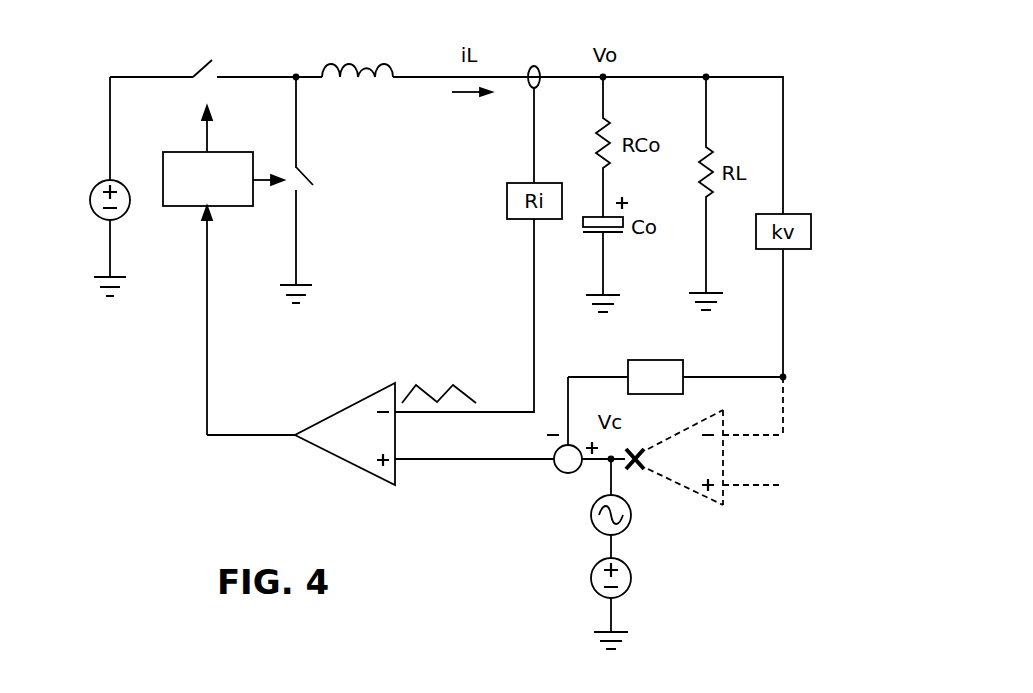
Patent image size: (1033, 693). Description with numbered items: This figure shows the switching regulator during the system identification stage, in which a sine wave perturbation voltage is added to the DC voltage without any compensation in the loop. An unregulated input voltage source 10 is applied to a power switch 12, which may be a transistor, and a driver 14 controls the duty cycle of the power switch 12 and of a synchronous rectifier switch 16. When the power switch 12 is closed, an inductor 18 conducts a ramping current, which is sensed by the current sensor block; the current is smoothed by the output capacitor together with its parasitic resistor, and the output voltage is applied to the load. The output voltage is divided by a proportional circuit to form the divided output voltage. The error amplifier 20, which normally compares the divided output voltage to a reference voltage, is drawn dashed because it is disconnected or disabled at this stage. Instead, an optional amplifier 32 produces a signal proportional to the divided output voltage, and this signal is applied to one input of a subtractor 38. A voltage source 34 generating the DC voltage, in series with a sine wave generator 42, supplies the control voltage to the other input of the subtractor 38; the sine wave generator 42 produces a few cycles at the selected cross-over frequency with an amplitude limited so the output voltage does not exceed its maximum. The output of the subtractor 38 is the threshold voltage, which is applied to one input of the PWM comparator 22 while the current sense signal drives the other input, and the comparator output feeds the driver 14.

The input voltage source 10 is at (96, 182).
The power switch 12 is at (199, 70).
The driver 14 is at (180, 152).
The synchronous rectifier switch 16 is at (315, 181).
The inductor 18 is at (368, 63).
The error amplifier 20 is at (723, 500).
The PWM comparator 22 is at (352, 405).
The amplifier 32 is at (663, 360).
The voltage source 34 is at (631, 582).
The subtractor 38 is at (556, 470).
The sine wave generator 42 is at (632, 515).